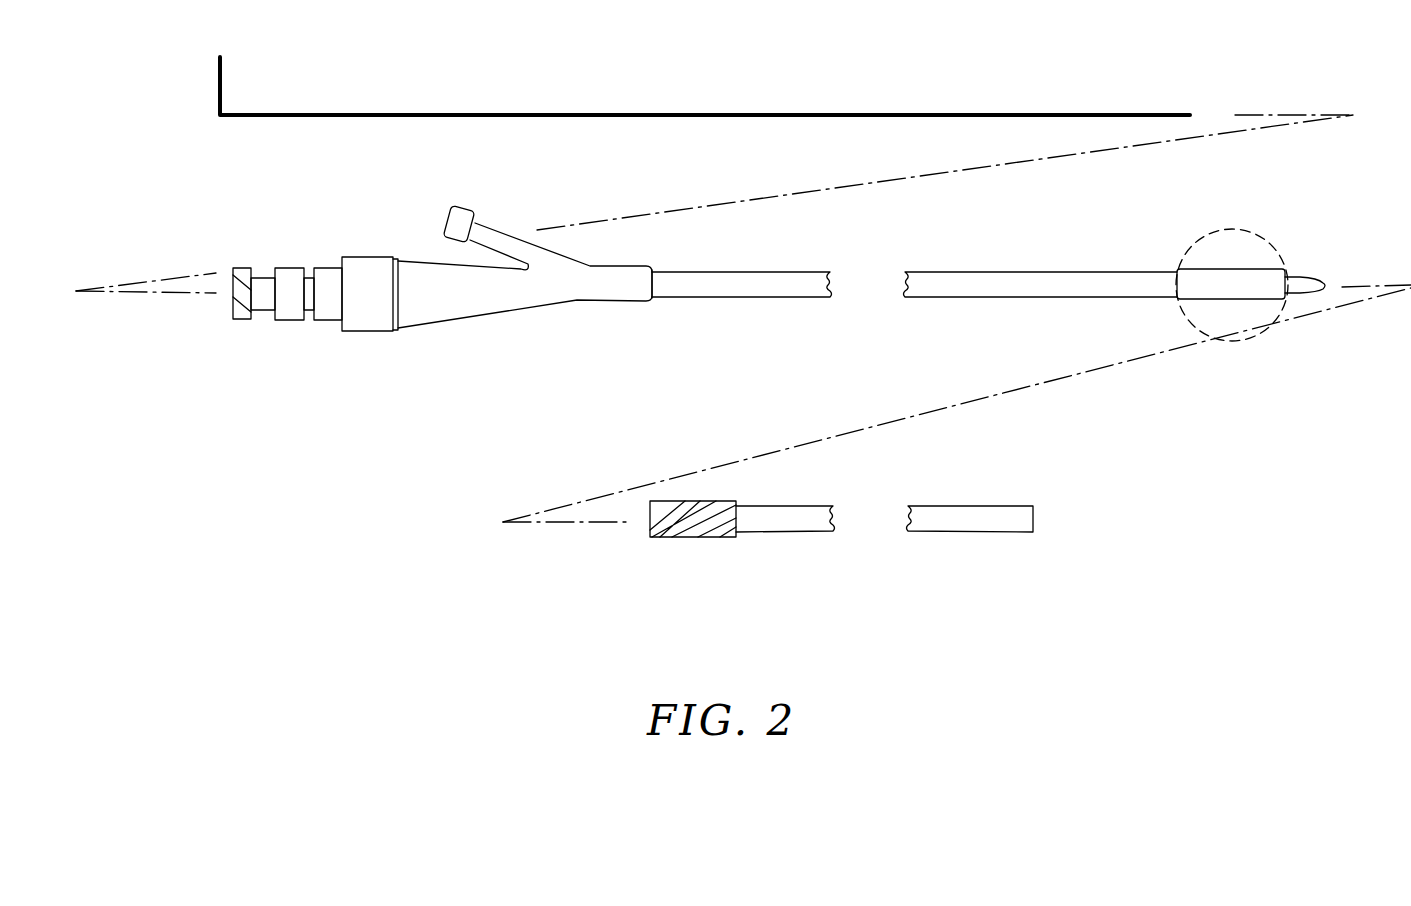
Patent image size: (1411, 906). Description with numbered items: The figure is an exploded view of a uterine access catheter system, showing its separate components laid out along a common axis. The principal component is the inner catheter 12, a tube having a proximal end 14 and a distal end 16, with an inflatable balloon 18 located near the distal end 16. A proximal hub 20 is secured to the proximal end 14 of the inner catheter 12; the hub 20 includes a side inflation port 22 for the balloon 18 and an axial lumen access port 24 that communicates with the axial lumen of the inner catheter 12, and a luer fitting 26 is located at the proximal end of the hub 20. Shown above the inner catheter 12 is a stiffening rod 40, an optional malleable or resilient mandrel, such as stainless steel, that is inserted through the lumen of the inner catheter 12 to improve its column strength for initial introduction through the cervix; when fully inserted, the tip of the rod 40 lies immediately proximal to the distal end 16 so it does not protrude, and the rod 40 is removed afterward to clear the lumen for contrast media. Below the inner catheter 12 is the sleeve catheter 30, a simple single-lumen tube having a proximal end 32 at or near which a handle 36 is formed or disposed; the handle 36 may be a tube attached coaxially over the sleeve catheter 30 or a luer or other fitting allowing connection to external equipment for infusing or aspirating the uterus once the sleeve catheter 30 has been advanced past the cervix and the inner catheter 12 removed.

The inner catheter 12 is at (753, 285).
The proximal end 14 is at (652, 298).
The distal end 16 is at (1312, 278).
The inflatable balloon 18 is at (1252, 278).
The proximal hub 20 is at (445, 312).
The inflation port 22 is at (502, 228).
The axial lumen access port 24 is at (368, 322).
The luer fitting 26 is at (244, 319).
The sleeve catheter 30 is at (972, 522).
The proximal end 32 is at (672, 557).
The handle 36 is at (707, 537).
The stiffening rod 40 is at (645, 113).